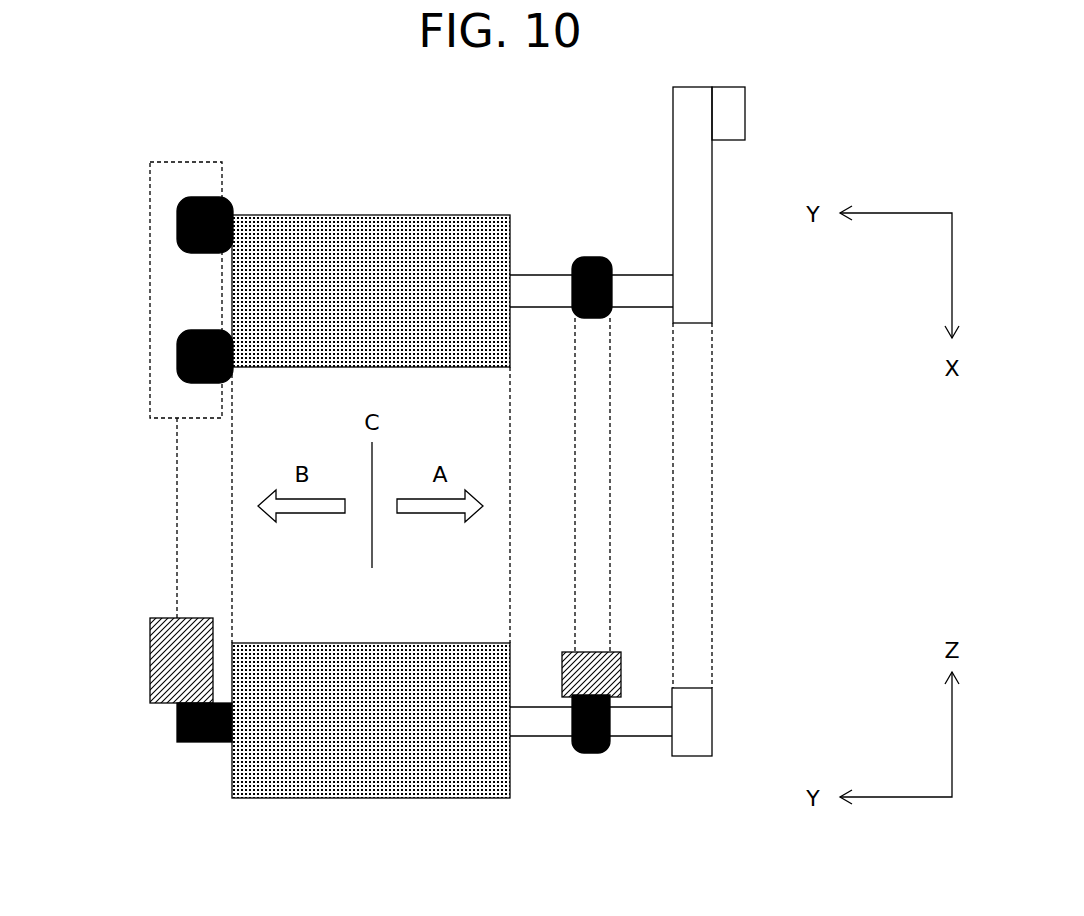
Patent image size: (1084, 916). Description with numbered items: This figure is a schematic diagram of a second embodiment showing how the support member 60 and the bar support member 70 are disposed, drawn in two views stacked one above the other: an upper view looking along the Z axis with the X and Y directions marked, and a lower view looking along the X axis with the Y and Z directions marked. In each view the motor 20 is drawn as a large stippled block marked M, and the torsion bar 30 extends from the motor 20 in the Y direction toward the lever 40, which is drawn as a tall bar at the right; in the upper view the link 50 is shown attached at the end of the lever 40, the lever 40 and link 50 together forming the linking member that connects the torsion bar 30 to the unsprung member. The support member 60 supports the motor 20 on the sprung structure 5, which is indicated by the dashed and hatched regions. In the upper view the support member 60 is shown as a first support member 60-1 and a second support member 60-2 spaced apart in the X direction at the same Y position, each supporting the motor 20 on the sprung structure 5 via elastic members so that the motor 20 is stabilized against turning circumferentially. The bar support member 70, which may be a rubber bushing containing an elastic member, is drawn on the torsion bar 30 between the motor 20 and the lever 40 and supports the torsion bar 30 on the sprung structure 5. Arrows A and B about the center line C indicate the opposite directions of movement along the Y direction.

The sprung structure 5 is at (150, 292).
The motor 20 is at (375, 213).
The torsion bar 30 is at (630, 274).
The lever 40 is at (712, 288).
The link 50 is at (745, 118).
The support member 60 is at (198, 744).
The first support member 60-1 is at (178, 222).
The second support member 60-2 is at (178, 350).
The bar support member 70 is at (590, 256).